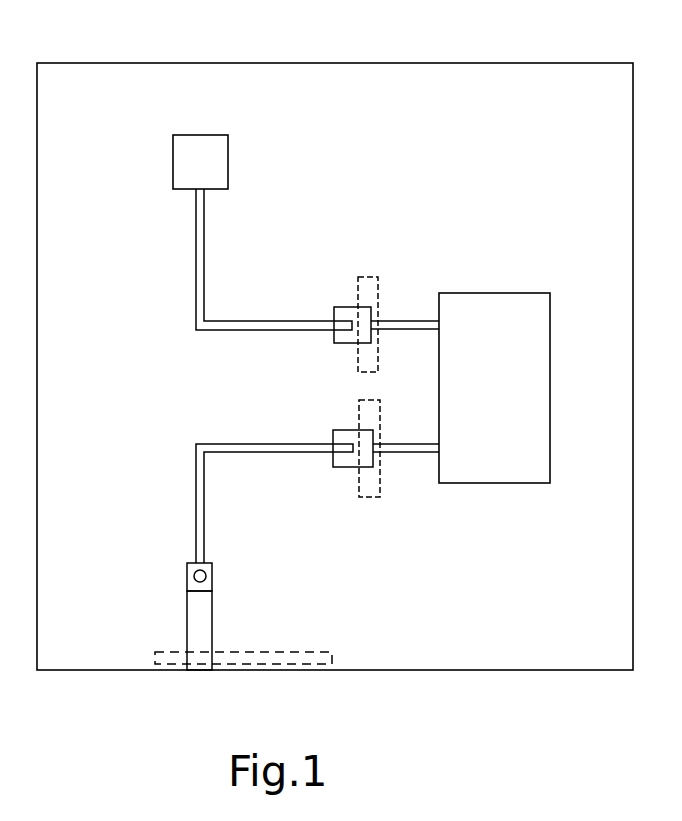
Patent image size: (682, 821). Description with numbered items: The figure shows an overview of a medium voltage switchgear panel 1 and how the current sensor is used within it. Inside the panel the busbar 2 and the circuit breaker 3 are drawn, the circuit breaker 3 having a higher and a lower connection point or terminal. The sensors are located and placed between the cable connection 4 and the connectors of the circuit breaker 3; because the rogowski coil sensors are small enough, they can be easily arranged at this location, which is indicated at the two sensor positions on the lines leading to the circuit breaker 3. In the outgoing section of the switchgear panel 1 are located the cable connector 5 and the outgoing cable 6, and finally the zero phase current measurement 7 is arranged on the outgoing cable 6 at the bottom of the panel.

The switchgear panel 1 is at (422, 63).
The busbar 2 is at (229, 163).
The circuit breaker 3 is at (478, 292).
The cable connection 4 is at (194, 461).
The cable connector 5 is at (213, 570).
The cable 6 is at (213, 620).
The zero phase current measurement 7 is at (318, 653).